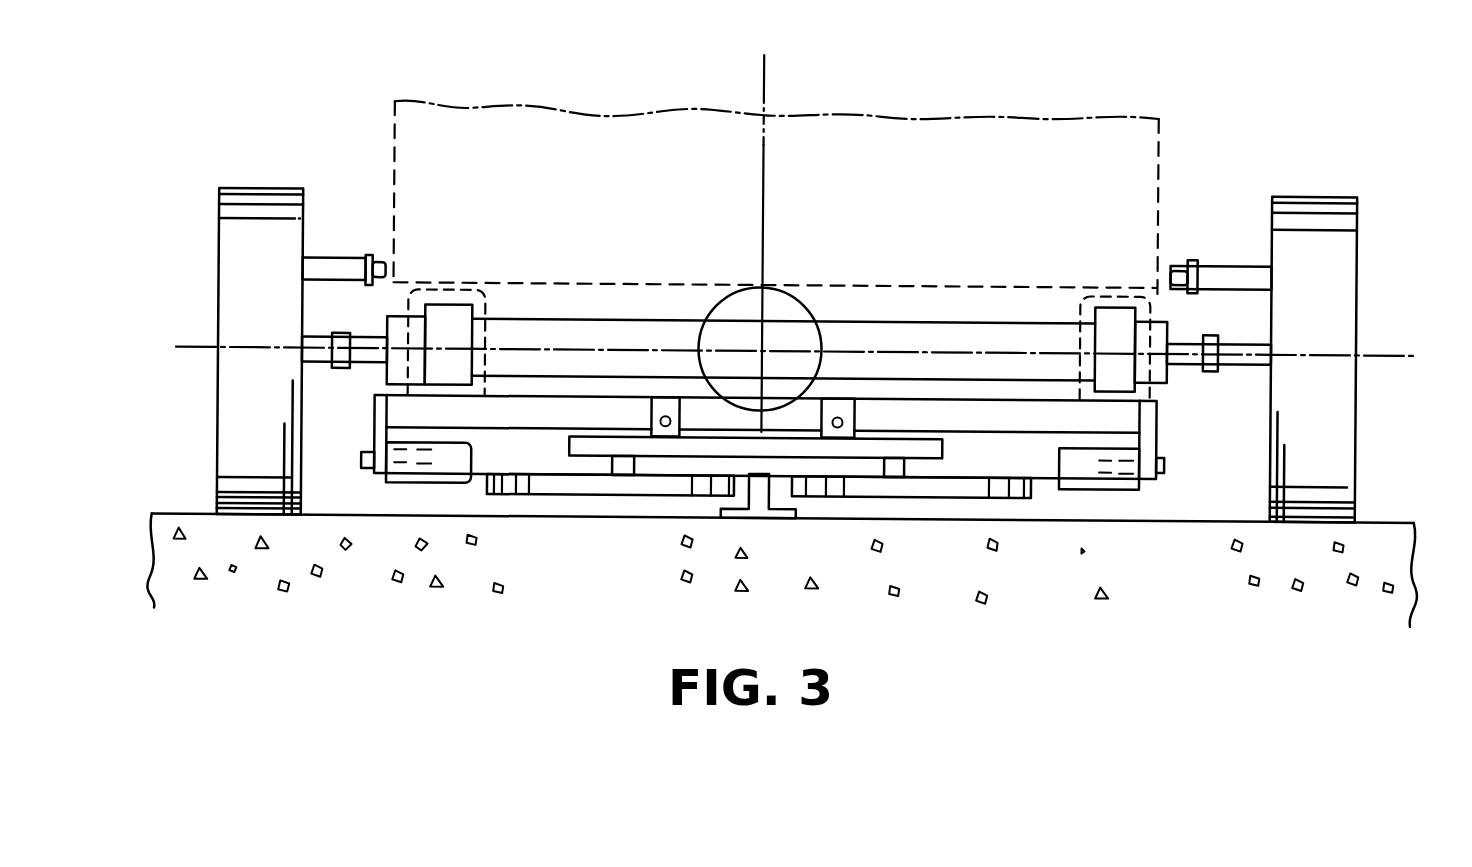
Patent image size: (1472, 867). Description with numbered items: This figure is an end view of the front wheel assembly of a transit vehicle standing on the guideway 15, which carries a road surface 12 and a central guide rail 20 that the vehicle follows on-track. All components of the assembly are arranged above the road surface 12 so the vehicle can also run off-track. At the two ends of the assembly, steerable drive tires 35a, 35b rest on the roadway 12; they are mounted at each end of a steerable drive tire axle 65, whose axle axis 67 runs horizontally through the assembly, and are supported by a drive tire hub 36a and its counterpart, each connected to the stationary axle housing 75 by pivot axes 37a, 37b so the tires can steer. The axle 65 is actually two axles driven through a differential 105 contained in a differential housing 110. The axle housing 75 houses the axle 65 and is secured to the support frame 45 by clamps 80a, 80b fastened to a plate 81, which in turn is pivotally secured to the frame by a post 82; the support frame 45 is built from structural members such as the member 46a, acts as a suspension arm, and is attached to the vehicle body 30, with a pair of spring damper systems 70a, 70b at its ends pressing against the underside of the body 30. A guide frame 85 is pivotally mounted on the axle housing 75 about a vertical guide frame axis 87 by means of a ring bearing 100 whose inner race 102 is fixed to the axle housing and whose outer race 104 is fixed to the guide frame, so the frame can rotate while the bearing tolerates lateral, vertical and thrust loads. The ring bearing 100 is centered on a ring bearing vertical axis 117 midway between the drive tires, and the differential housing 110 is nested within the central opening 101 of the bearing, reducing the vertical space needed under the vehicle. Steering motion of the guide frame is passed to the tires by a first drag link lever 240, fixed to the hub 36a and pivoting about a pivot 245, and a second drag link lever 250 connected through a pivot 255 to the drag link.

The road surface 12 is at (330, 518).
The guideway 15 is at (182, 516).
The guide rail 20 is at (761, 511).
The vehicle body 30 is at (1067, 111).
The first steerable drive tire 35a is at (1333, 243).
The second steerable drive tire 35b is at (236, 246).
The first steerable drive tire hub 36a is at (1237, 337).
The pivot axis 37a is at (1187, 368).
The pivot axis 37b is at (343, 371).
The support frame 45 is at (1058, 412).
The structural member 46a is at (1085, 476).
The steerable drive tire axle 65 is at (362, 306).
The axle axis 67 is at (1393, 350).
The spring damper system 70a is at (1130, 298).
The spring damper system 70b is at (413, 302).
The axle housing 75 is at (950, 332).
The clamp 80a is at (1100, 305).
The clamp 80b is at (452, 309).
The plate 81 is at (1167, 420).
The post 82 is at (1167, 464).
The guide frame 85 is at (945, 444).
The vertical guide frame axis 87 is at (803, 307).
The ring bearing 100 is at (732, 424).
The central opening 101 is at (703, 421).
The inner race 102 is at (666, 418).
The outer race 104 is at (650, 427).
The differential 105 is at (780, 298).
The differential housing 110 is at (745, 298).
The ring bearing vertical axis 117 is at (766, 72).
The first drag link lever 240 is at (1240, 263).
The pivot 245 is at (1192, 257).
The second drag link lever 250 is at (318, 262).
The pivot 255 is at (368, 258).